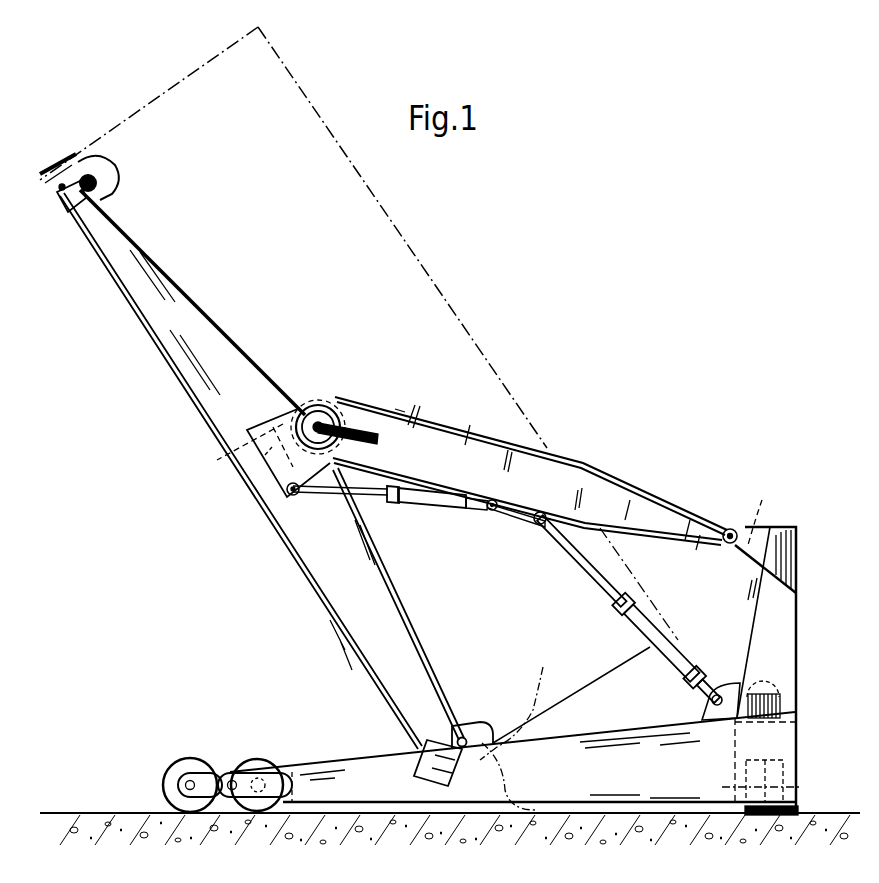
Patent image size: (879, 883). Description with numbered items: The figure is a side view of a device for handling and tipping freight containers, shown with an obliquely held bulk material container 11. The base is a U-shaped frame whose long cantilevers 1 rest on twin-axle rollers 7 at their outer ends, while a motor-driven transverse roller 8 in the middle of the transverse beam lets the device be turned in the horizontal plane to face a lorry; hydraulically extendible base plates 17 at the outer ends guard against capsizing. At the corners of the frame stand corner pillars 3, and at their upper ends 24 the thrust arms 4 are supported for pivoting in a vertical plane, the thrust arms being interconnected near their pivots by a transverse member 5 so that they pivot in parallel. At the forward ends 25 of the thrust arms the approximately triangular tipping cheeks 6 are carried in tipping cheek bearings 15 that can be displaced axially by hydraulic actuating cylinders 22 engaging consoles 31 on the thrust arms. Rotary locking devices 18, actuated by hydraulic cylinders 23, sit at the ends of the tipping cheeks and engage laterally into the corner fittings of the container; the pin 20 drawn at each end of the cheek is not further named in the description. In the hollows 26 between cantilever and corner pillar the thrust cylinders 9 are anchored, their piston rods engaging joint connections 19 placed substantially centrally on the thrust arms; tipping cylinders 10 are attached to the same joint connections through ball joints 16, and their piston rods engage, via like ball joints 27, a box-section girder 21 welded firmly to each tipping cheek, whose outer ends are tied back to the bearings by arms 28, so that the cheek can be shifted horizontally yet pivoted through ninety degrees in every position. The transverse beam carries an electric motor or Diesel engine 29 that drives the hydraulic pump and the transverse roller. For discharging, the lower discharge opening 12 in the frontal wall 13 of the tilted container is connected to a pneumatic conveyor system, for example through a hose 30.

The cantilever 1 is at (628, 805).
The corner pillar 3 is at (760, 600).
The thrust arm 4 is at (545, 465).
The transverse member 5 is at (707, 527).
The tipping cheek 6 is at (238, 352).
The twin-axle roller 7 is at (250, 768).
The transverse roller 8 is at (750, 813).
The thrust cylinder 9 is at (667, 660).
The tipping cylinder 10 is at (436, 498).
The bulk material container 11 is at (472, 372).
The lower discharge opening 12 is at (524, 705).
The frontal wall 13 is at (617, 668).
The tipping cheek bearing 15 is at (318, 420).
The ball joint 16 is at (490, 512).
The base plate 17 is at (787, 820).
The rotary locking device 18 is at (455, 778).
The joint connection 19 is at (530, 528).
The pin 20 is at (462, 735).
The box-section girder 21 is at (262, 447).
The actuating cylinder 22 is at (325, 412).
The hydraulic cylinder 23 is at (475, 724).
The upper end 24 is at (764, 510).
The forward end 25 is at (378, 410).
The hollow 26 is at (730, 675).
The ball joint 27 is at (285, 496).
The arm 28 is at (288, 416).
The electric motor or Diesel engine 29 is at (770, 685).
The hose 30 is at (517, 783).
The console 31 is at (385, 432).